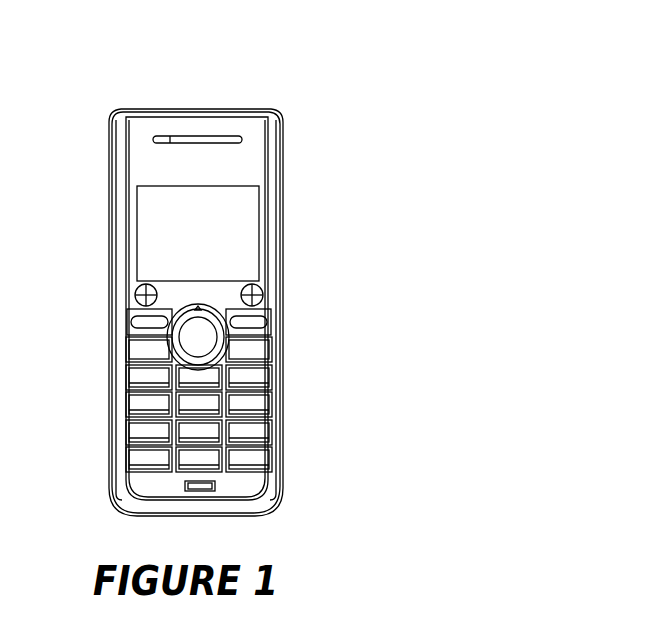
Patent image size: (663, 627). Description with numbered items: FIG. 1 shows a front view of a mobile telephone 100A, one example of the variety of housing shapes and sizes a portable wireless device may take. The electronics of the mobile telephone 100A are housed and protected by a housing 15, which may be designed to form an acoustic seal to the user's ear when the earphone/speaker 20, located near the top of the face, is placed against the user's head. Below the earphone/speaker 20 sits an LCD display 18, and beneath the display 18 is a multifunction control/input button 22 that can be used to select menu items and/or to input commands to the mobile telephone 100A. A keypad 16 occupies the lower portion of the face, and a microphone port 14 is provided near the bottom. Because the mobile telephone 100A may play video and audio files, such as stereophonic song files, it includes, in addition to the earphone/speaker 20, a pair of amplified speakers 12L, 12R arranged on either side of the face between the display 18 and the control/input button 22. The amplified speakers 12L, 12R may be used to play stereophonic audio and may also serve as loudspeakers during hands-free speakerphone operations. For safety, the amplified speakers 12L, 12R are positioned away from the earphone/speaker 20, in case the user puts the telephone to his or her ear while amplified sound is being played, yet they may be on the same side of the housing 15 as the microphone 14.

The mobile telephone 100A is at (278, 370).
The housing 15 is at (278, 218).
The earphone/speaker 20 is at (205, 140).
The LCD display 18 is at (248, 242).
The amplified speaker 12L is at (135, 295).
The amplified speaker 12R is at (262, 295).
The multifunction control/input button 22 is at (183, 338).
The keypad 16 is at (143, 452).
The microphone port 14 is at (200, 492).